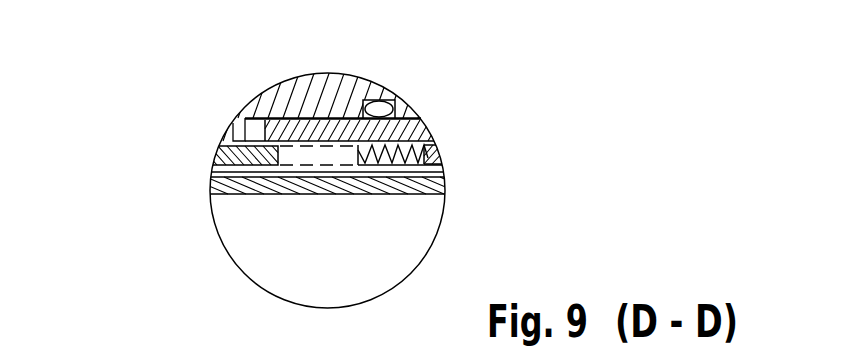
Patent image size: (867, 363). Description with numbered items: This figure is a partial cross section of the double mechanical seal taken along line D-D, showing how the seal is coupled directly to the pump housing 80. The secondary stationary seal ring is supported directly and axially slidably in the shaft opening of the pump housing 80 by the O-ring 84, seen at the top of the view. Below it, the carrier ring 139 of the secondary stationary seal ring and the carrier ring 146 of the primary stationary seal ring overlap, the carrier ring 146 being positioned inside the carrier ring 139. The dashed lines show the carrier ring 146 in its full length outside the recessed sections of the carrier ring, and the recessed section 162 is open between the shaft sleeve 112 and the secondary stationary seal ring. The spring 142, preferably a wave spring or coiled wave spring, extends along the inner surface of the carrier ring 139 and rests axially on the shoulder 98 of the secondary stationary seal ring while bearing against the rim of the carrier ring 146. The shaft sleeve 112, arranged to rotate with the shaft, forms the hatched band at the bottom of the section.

The pump housing 80 is at (297, 107).
The O-ring 84 is at (378, 110).
The carrier ring 139 is at (428, 125).
The recessed section 162 is at (320, 160).
The carrier ring 146 is at (245, 158).
The spring 142 is at (437, 150).
The shoulder 98 is at (411, 175).
The shaft sleeve 112 is at (328, 196).